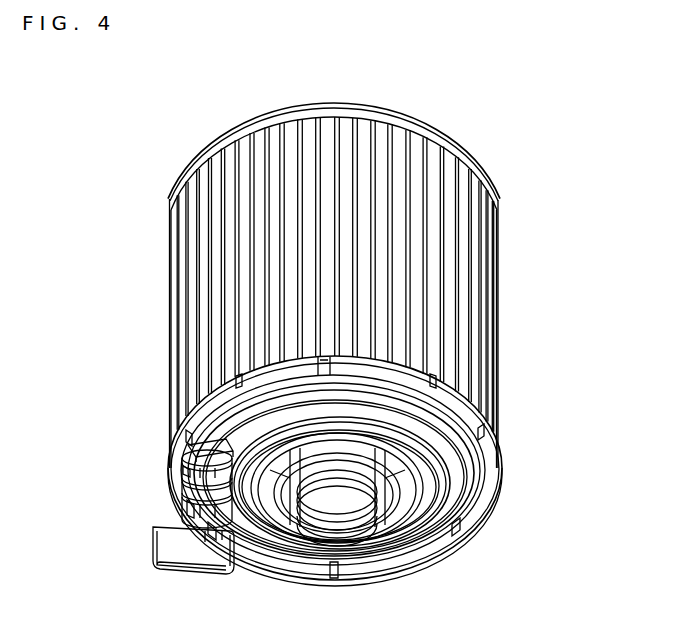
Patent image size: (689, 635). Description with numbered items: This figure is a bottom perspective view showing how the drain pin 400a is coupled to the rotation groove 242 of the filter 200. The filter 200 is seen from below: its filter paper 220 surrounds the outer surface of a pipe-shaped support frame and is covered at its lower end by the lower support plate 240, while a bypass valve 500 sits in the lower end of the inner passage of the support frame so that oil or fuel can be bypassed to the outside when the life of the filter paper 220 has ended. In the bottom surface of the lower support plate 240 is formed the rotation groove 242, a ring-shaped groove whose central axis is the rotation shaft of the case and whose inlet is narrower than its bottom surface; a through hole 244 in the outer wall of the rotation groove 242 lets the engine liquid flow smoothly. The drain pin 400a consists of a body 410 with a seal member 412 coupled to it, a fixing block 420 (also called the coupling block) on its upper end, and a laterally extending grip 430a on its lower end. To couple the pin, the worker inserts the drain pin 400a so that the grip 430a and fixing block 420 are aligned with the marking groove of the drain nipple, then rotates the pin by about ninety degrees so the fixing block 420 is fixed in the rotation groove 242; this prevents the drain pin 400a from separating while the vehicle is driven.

The filter 200 is at (445, 137).
The filter paper 220 is at (432, 237).
The lower support plate 240 is at (490, 488).
The rotation groove 242 is at (470, 530).
The through hole 244 is at (440, 394).
The bypass valve 500 is at (377, 542).
The drain pin 400a is at (83, 418).
The body 410 is at (183, 470).
The seal member 412 is at (187, 490).
The fixing block 420 is at (205, 433).
The grip 430a is at (167, 540).